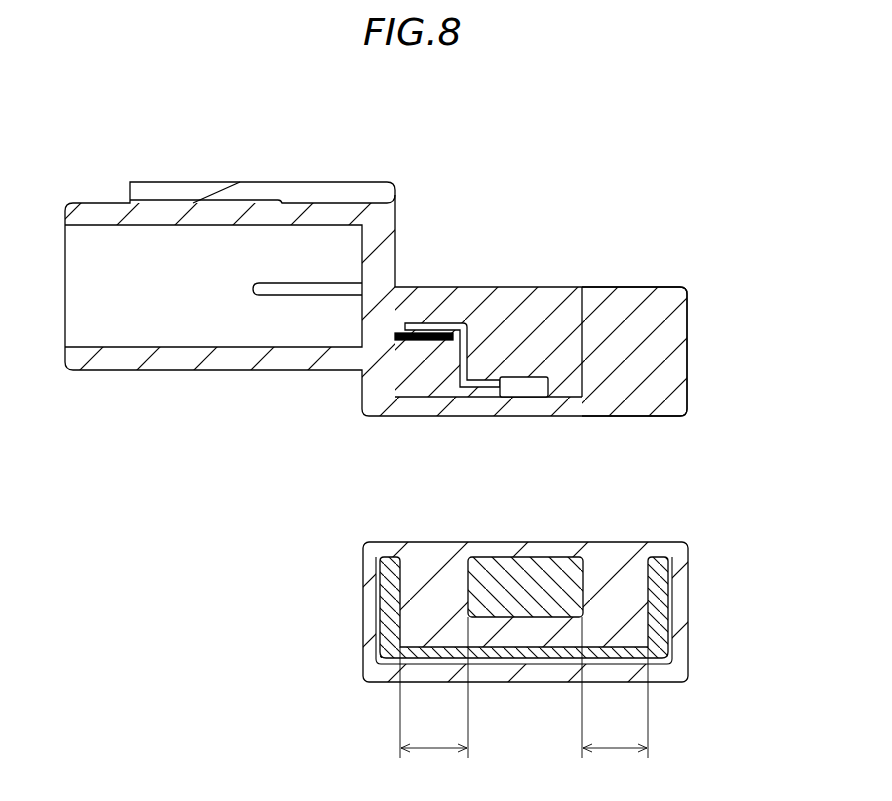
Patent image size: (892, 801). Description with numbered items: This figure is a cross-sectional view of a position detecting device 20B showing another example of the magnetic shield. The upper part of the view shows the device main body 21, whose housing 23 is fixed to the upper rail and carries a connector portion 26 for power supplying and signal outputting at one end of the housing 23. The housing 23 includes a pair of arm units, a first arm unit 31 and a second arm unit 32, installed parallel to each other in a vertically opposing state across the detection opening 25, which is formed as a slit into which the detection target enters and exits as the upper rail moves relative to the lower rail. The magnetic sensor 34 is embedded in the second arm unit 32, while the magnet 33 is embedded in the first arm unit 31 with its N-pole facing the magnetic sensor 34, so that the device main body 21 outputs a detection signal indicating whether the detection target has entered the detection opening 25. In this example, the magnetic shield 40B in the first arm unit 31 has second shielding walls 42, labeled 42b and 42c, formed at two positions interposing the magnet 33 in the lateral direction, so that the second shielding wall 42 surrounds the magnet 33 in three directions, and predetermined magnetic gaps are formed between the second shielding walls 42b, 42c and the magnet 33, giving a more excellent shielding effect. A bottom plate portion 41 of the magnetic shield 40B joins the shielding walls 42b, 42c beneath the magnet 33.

The position detecting device 20B is at (432, 291).
The device main body 21 is at (548, 318).
The housing 23 is at (488, 342).
The connector portion 26 is at (145, 371).
The second arm unit 32 is at (680, 323).
The magnetic sensor 34 is at (526, 400).
The detection opening 25 is at (522, 624).
The first arm unit 31 is at (612, 550).
The magnet 33 is at (546, 555).
The magnetic shield 40B is at (522, 616).
The bottom plate 41 is at (528, 667).
The second shielding wall 42 is at (522, 607).
The second shielding wall 42b is at (388, 585).
The second shielding wall 42c is at (660, 574).